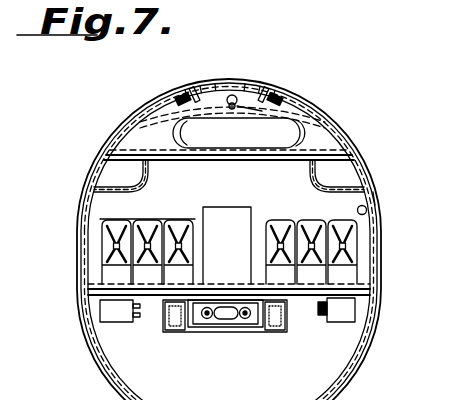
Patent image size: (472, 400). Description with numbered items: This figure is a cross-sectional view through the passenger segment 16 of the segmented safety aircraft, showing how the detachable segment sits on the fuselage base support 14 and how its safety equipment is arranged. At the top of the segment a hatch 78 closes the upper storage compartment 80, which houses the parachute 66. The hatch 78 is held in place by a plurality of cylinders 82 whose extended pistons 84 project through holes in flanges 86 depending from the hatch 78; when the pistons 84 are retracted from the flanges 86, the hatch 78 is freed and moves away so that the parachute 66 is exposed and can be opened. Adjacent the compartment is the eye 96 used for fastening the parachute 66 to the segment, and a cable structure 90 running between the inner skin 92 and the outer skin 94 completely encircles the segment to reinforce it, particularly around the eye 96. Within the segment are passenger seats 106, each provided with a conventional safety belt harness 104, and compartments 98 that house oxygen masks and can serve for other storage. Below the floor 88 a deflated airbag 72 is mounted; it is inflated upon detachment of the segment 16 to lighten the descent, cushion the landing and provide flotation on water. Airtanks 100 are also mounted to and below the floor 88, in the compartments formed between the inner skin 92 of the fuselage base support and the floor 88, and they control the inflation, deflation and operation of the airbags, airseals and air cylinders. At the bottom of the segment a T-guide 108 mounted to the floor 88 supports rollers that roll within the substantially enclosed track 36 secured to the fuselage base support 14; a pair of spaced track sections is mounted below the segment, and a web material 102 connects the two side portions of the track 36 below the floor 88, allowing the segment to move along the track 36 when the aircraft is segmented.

The fuselage base support 14 is at (349, 381).
The passenger segment 16 is at (324, 114).
The track 36 is at (290, 313).
The parachute 66 is at (182, 134).
The airbag 72 is at (226, 327).
The hatch 78 is at (234, 85).
The upper storage compartment 80 is at (147, 138).
The cylinders 82 is at (176, 97).
The pistons 84 is at (266, 94).
The flanges 86 is at (263, 90).
The floor 88 is at (300, 300).
The cable structure 90 is at (137, 100).
The inner skin 92 is at (369, 216).
The outer skin 94 is at (377, 197).
The eye 96 is at (228, 97).
The compartments 98 is at (343, 173).
The airtanks 100 is at (112, 316).
The web material 102 is at (190, 331).
The safety belt harnesses 104 is at (163, 226).
The passenger seat 106 is at (160, 220).
The T-guide 108 is at (168, 327).